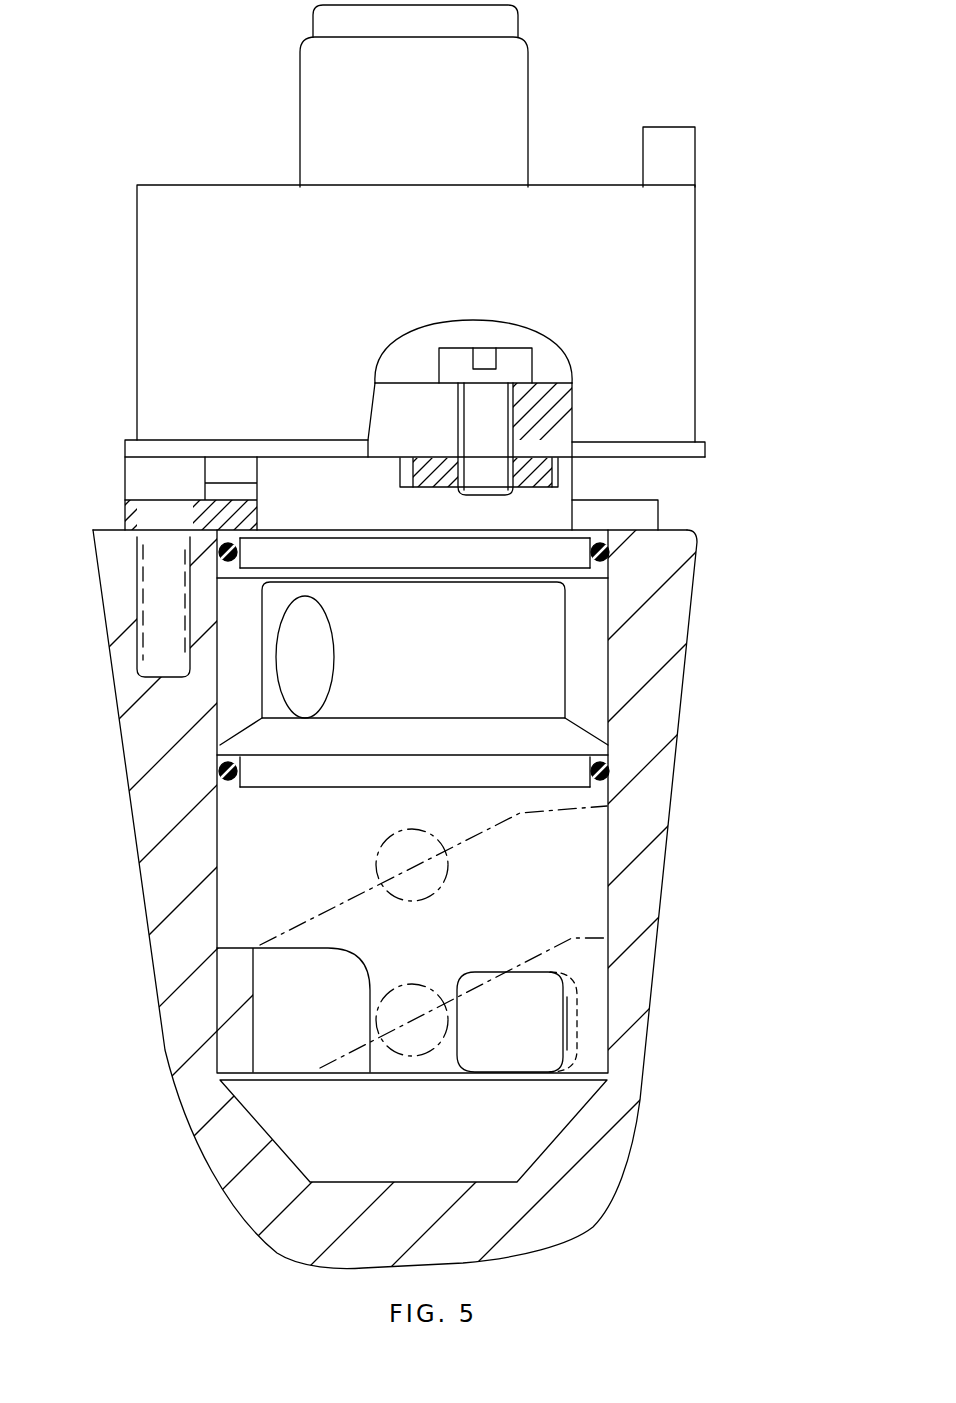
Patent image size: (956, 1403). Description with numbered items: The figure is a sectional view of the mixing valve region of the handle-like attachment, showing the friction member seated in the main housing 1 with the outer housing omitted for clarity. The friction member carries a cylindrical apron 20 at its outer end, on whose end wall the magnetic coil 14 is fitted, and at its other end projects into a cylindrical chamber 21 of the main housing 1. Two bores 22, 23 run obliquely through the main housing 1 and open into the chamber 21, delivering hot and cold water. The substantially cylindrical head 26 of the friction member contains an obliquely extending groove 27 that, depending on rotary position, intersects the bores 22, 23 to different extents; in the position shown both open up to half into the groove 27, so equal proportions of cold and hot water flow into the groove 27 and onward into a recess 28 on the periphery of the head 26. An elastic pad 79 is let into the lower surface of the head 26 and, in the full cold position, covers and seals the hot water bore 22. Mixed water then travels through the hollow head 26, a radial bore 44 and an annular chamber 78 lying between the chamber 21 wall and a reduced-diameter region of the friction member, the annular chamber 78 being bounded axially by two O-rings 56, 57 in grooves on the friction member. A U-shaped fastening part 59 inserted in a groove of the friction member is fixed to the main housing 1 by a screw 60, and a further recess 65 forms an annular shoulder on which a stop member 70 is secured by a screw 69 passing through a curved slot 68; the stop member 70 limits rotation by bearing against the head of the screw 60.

The main housing 1 is at (585, 1121).
The magnetic coil 14 is at (415, 131).
The cylindrical apron 20 is at (672, 269).
The cylindrical chamber 21 is at (605, 706).
The bore 22 is at (432, 982).
The bore 23 is at (447, 866).
The head 26 is at (226, 852).
The groove 27 is at (346, 903).
The recess 28 is at (264, 1028).
The radial bore 44 is at (333, 641).
The O-ring 56 is at (613, 541).
The O-ring 57 is at (607, 769).
The U-shaped fastening part 59 is at (193, 537).
The screw 60 is at (142, 480).
The recess 65 is at (663, 459).
The curved slot 68 is at (390, 413).
The screw 69 is at (490, 420).
The stop member 70 is at (443, 466).
The annular chamber 78 is at (600, 647).
The elastic pad 79 is at (543, 1035).